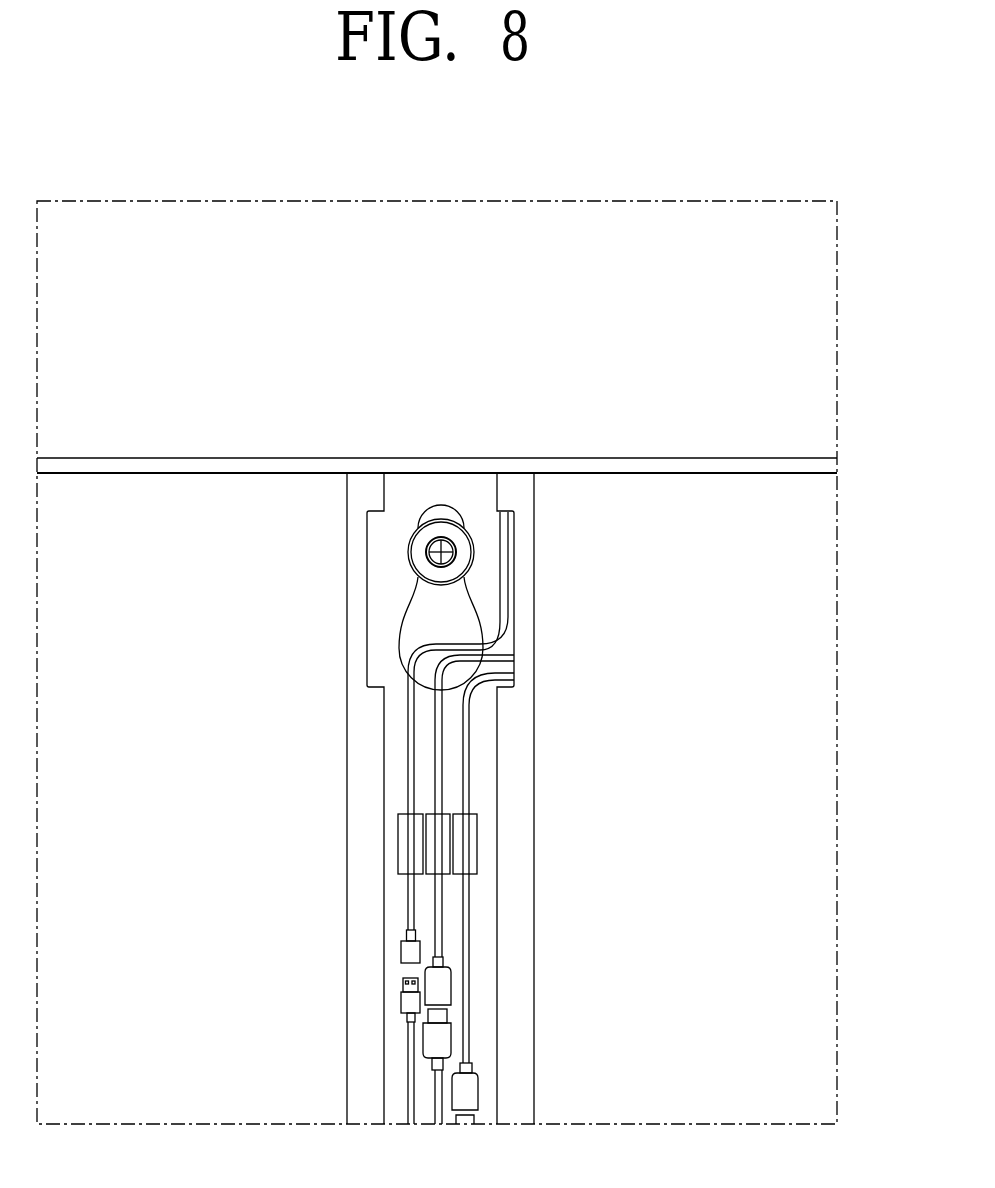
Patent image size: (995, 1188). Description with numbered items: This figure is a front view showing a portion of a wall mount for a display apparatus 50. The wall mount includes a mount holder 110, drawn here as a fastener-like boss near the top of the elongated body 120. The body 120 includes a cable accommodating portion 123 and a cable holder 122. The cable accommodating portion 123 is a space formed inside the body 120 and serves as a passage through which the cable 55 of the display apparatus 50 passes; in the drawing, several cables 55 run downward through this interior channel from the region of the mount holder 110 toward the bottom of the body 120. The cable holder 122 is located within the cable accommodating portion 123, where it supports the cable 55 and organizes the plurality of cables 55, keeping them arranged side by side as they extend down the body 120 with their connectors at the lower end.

The display apparatus 50 is at (815, 350).
The mount holder 110 is at (408, 552).
The body 120 is at (340, 808).
The cable 55 is at (467, 760).
The cable accommodating portion 123 is at (488, 797).
The cable holder 122 is at (477, 845).